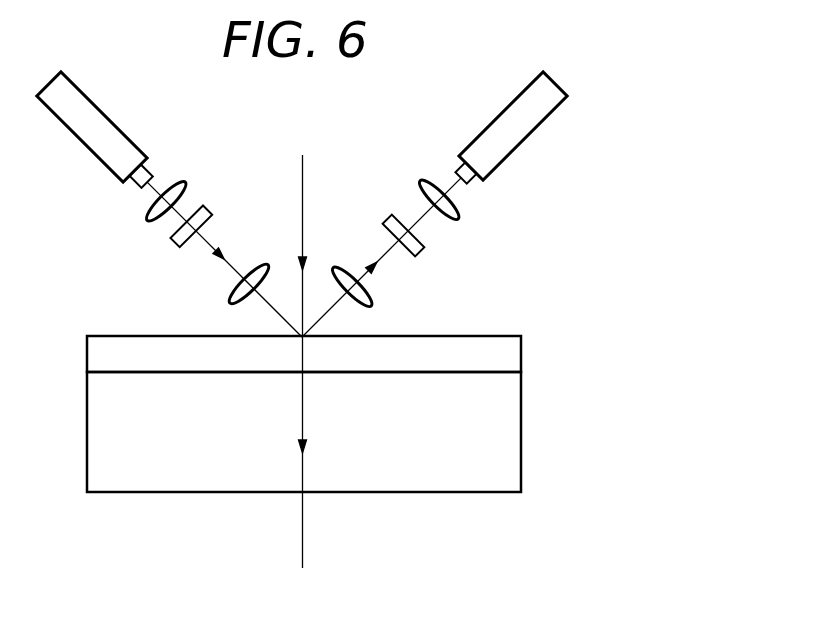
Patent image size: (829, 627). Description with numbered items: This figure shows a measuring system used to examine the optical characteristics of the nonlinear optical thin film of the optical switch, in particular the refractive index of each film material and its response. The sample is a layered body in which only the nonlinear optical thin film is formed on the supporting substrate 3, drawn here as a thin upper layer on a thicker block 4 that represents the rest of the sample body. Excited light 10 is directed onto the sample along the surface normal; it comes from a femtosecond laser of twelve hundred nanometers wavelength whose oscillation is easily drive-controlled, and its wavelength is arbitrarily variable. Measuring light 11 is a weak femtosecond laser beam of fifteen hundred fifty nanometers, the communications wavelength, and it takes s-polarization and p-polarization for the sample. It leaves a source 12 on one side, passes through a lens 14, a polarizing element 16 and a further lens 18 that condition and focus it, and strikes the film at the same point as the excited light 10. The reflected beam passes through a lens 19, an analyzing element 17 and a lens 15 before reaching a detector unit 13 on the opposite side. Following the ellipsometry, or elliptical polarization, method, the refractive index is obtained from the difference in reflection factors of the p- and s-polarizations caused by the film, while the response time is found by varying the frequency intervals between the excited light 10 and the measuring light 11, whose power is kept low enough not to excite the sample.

The supporting substrate 3 is at (510, 362).
The substrate 4 is at (513, 448).
The excited light 10 is at (303, 185).
The measuring light 11 is at (217, 257).
The light source (laser) 12 is at (103, 112).
The light detector 13 is at (557, 87).
The collimating lens 14 is at (145, 212).
The condensing lens 15 is at (463, 213).
The polarizer 16 is at (173, 240).
The analyzer 17 is at (427, 248).
The focusing lens 18 is at (253, 272).
The collecting lens 19 is at (373, 305).